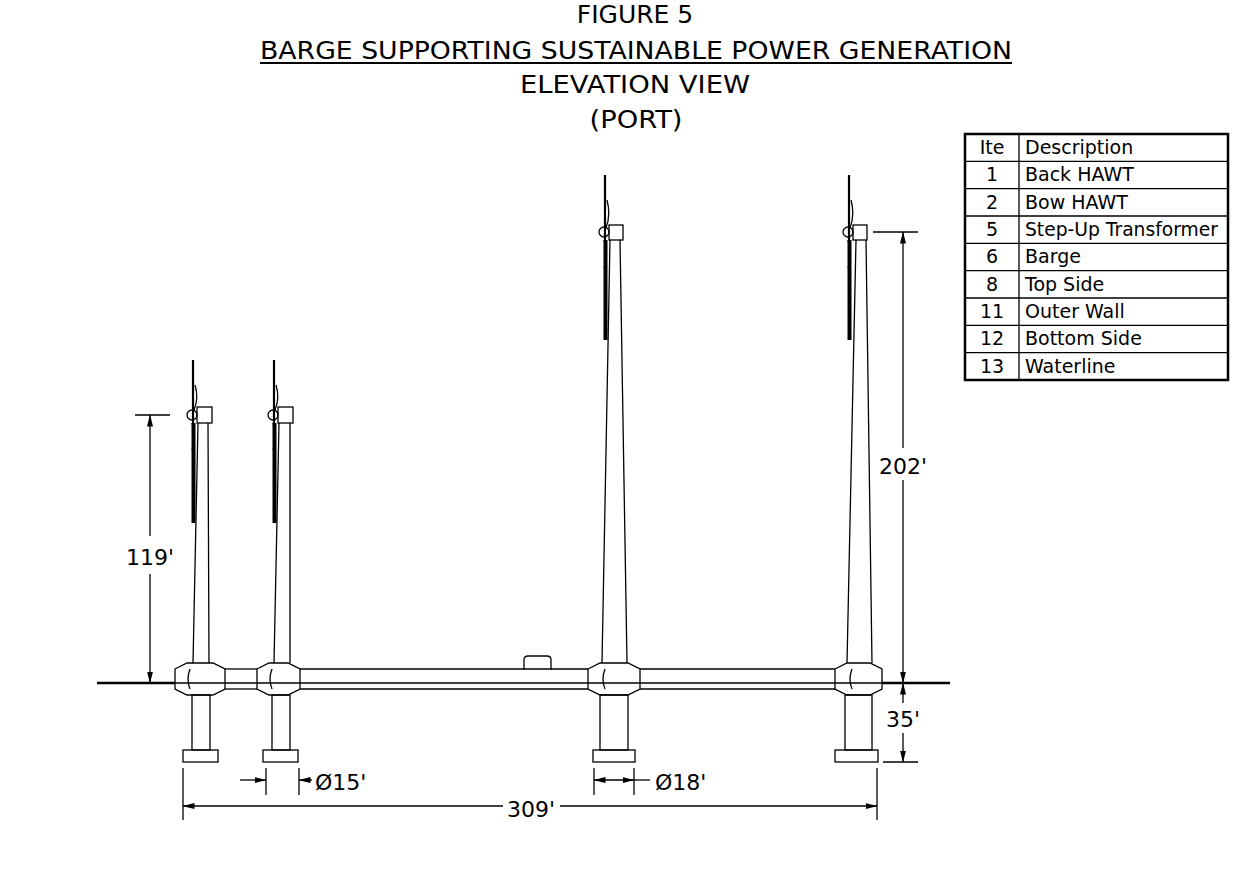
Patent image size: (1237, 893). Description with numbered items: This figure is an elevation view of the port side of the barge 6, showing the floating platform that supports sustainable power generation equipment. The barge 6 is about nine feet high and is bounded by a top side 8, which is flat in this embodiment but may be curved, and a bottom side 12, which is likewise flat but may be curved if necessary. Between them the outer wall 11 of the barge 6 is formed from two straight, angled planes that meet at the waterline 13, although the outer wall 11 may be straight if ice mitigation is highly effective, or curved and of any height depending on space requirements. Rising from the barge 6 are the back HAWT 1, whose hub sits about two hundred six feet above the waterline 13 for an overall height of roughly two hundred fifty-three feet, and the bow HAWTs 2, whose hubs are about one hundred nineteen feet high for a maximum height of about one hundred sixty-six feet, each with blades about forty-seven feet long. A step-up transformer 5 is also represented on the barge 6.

The Back HAWT 1 is at (625, 390).
The Bow HAWT 2 is at (208, 487).
The Step-up Transformer 5 is at (538, 654).
The Barge 6 is at (345, 668).
The Top Side 8 is at (733, 668).
The Outer Wall 11 is at (707, 679).
The Bottom Side 12 is at (487, 691).
The Waterline 13 is at (140, 686).